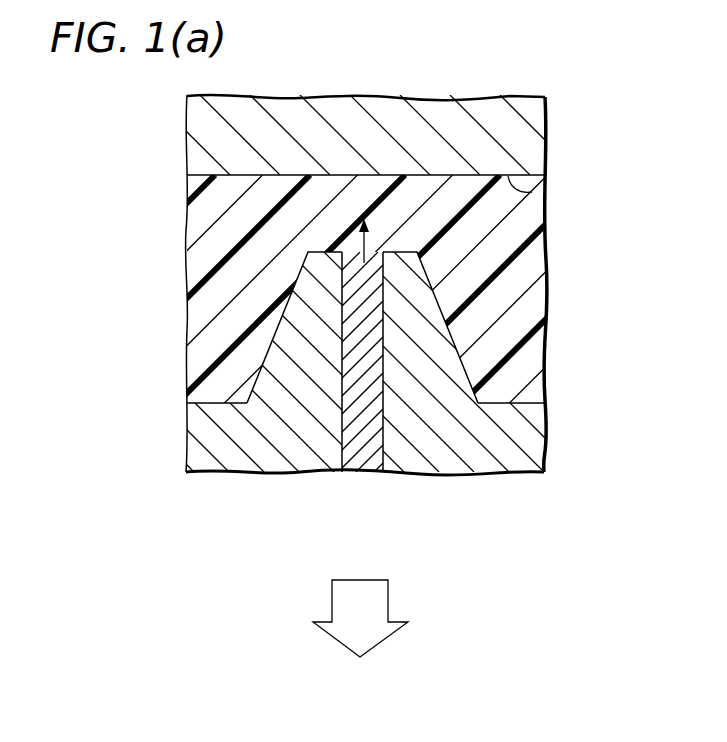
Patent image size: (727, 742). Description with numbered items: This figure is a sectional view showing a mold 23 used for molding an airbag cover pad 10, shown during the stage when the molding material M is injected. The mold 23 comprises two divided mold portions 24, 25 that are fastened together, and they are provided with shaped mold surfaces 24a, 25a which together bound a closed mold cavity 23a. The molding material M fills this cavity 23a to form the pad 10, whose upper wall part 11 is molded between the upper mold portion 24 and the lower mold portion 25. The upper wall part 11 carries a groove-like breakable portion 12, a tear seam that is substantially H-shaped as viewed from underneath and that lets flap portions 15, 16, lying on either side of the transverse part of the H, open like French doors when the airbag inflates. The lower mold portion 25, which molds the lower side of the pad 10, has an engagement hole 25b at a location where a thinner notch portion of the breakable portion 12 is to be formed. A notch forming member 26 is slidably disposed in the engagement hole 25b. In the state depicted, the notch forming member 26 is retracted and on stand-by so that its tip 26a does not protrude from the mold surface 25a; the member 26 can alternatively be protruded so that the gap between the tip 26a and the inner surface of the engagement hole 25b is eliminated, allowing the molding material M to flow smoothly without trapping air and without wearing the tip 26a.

The pad 10 is at (180, 180).
The upper wall part 11 is at (187, 208).
The molding material M is at (188, 256).
The flap portion 16 is at (188, 368).
The breakable portion 12 is at (318, 188).
The mold portion 24 is at (532, 137).
The mold surface 24a is at (530, 193).
The mold 23 is at (633, 115).
The mold cavity 23a is at (532, 278).
The flap portion 15 is at (498, 390).
The mold portion 25 is at (532, 430).
The mold surface 25a is at (508, 404).
The engagement hole 25b is at (340, 450).
The notch forming member 26 is at (377, 473).
The tip 26a is at (372, 267).